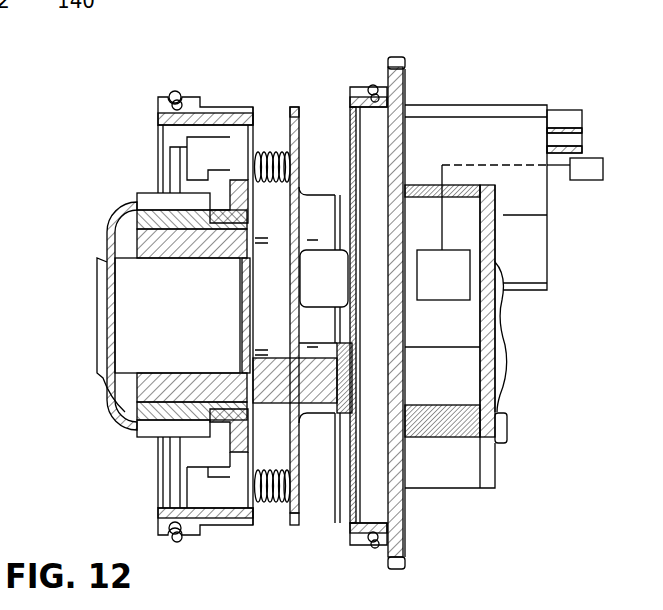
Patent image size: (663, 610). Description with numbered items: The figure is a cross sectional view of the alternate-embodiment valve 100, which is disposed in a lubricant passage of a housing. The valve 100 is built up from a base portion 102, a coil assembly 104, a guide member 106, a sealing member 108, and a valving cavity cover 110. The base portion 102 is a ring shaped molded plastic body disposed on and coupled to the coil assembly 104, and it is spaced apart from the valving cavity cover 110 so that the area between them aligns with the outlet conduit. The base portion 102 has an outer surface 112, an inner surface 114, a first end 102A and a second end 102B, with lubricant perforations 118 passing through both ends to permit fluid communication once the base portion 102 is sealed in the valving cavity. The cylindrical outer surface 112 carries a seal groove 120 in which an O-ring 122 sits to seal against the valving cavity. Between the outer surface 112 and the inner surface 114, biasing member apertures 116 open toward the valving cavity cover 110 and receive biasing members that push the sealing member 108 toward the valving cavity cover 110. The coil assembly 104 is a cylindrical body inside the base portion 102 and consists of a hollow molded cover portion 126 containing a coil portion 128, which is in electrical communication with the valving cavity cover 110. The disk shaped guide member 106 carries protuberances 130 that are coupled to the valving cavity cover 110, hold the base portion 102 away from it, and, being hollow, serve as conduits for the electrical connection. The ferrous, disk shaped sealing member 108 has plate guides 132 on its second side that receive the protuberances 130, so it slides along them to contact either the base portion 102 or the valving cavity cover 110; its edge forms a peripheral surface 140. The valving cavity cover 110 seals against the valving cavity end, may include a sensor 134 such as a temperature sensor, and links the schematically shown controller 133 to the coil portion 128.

The valve 100 is at (476, 288).
The base portion 102 is at (210, 287).
The first end 102A is at (160, 513).
The second end 102B is at (219, 126).
The coil assembly 104 is at (111, 204).
The guide member 106 is at (274, 248).
The sealing member 108 is at (295, 535).
The valving cavity cover 110 is at (488, 497).
The outer surface 112 is at (225, 107).
The inner surface 114 is at (130, 410).
The biasing member apertures 116 is at (256, 133).
The lubricant perforations 118 is at (240, 157).
The seal groove 120 is at (179, 91).
The O-ring 122 is at (166, 94).
The cover portion 126 is at (110, 421).
The coil portion 128 is at (130, 242).
The protuberances 130 is at (305, 308).
The plate guides 132 is at (292, 222).
The controller 133 is at (585, 181).
The sensor 134 is at (442, 302).
The peripheral surface 140 is at (300, 106).